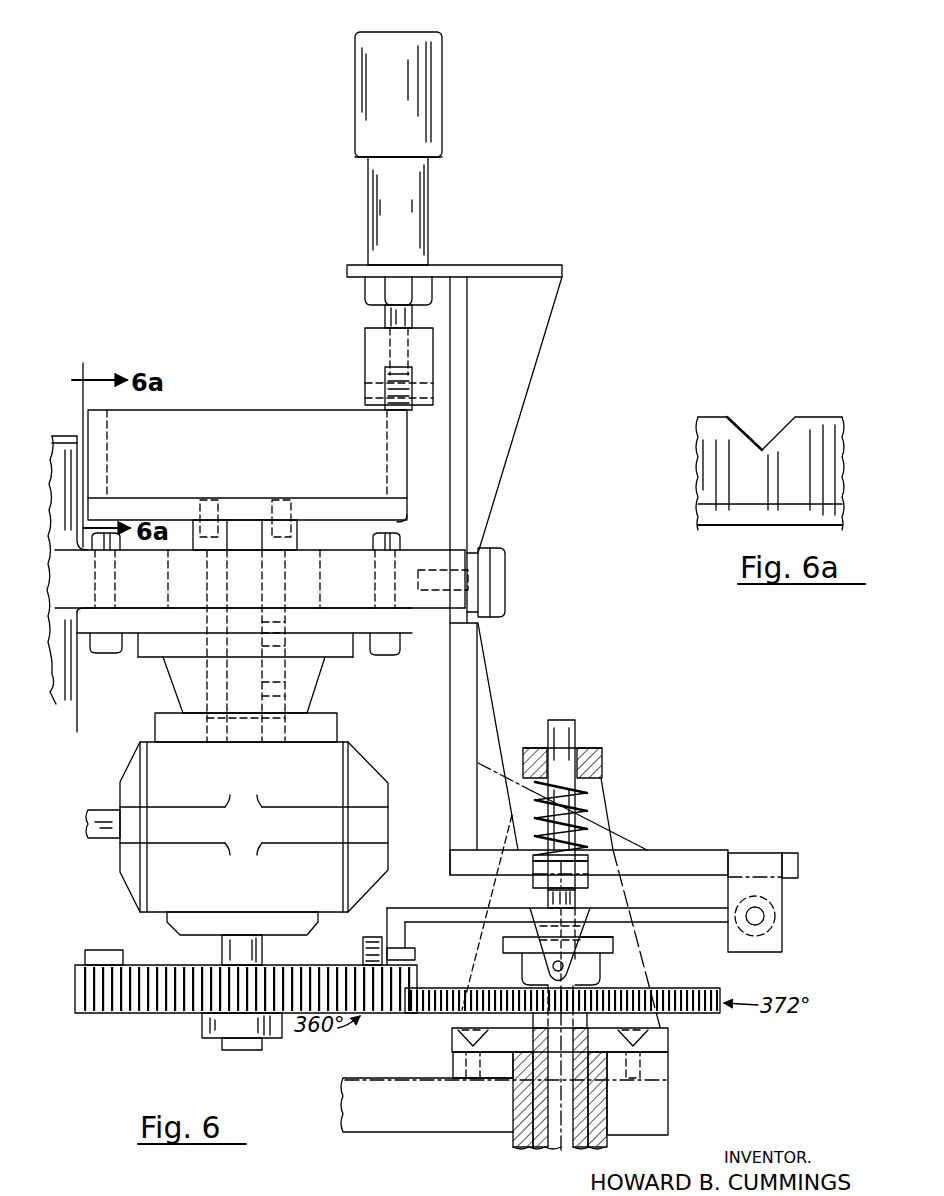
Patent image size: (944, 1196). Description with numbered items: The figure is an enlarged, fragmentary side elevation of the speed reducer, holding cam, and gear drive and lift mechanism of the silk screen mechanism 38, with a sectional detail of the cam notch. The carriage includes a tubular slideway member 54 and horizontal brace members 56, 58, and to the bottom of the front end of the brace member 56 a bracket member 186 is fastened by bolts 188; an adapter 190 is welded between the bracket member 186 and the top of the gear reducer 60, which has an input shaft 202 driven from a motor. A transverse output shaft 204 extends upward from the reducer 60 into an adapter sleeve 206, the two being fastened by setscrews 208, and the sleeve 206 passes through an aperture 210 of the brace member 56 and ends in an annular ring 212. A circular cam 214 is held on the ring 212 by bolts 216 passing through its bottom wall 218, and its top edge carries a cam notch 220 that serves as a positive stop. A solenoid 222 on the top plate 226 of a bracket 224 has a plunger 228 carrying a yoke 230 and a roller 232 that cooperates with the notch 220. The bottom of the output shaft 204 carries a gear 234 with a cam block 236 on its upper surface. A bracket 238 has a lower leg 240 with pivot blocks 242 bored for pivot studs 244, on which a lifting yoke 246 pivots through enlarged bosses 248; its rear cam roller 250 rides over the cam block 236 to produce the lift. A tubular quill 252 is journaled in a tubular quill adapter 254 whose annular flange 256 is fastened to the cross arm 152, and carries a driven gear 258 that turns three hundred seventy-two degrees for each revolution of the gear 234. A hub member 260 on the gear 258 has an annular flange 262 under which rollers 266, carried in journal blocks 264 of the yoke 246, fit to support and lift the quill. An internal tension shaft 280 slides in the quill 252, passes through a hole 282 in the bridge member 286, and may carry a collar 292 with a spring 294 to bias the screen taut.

In FIG. 6, the silk screen mechanism 38 is at (604, 710).
In FIG. 6, the tubular slideway member 54 is at (78, 696).
In FIG. 6, the horizontal brace member 56 is at (444, 546).
In FIG. 6, the horizontal brace member 58 is at (398, 1080).
In FIG. 6, the gear reducer 60 is at (258, 833).
In FIG. 6, the cross arm 152 is at (668, 1068).
In FIG. 6, the bracket member 186 is at (396, 626).
In FIG. 6, the bolts 188 is at (92, 652).
In FIG. 6, the adapter 190 is at (309, 696).
In FIG. 6, the input shaft 202 is at (106, 810).
In FIG. 6, the transverse output shaft 204 is at (252, 700).
In FIG. 6, the adapter sleeve 206 is at (296, 624).
In FIG. 6, the setscrews 208 is at (318, 680).
In FIG. 6, the aperture 210 is at (322, 587).
In FIG. 6, the annular ring 212 is at (300, 545).
In FIG. 6, the circular cam 214 is at (268, 452).
In FIG. 6A, the circular cam 214 is at (712, 417).
In FIG. 6, the bolts 216 is at (207, 500).
In FIG. 6, the bottom wall 218 is at (412, 524).
In FIG. 6A, the cam notch 220 is at (762, 420).
In FIG. 6, the solenoid 222 is at (356, 85).
In FIG. 6, the bracket 224 is at (548, 328).
In FIG. 6, the top plate 226 is at (446, 265).
In FIG. 6, the plunger 228 is at (384, 316).
In FIG. 6, the yoke 230 is at (366, 340).
In FIG. 6, the roller 232 is at (392, 369).
In FIG. 6, the gear 234 is at (160, 1012).
In FIG. 6, the cam block 236 is at (86, 950).
In FIG. 6, the bracket 238 is at (500, 698).
In FIG. 6, the lower leg 240 is at (694, 850).
In FIG. 6, the pivot blocks 242 is at (782, 902).
In FIG. 6, the pivot studs 244 is at (766, 920).
In FIG. 6, the lifting yoke 246 is at (392, 906).
In FIG. 6, the enlarged bosses 248 is at (770, 930).
In FIG. 6, the cam roller 250 is at (363, 950).
In FIG. 6, the tubular quill 252 is at (550, 1149).
In FIG. 6, the tubular quill adapter 254 is at (513, 1121).
In FIG. 6, the annular flange 256 is at (668, 1040).
In FIG. 6, the driven gear 258 is at (703, 990).
In FIG. 6, the hub member 260 is at (573, 980).
In FIG. 6, the annular flange 262 is at (503, 944).
In FIG. 6, the journal blocks 264 is at (613, 940).
In FIG. 6, the rollers 266 is at (532, 980).
In FIG. 6, the internal tension shaft 280 is at (562, 720).
In FIG. 6, the hole 282 is at (580, 746).
In FIG. 6, the bridge member 286 is at (621, 824).
In FIG. 6, the collar 292 is at (588, 885).
In FIG. 6, the spring 294 is at (590, 800).